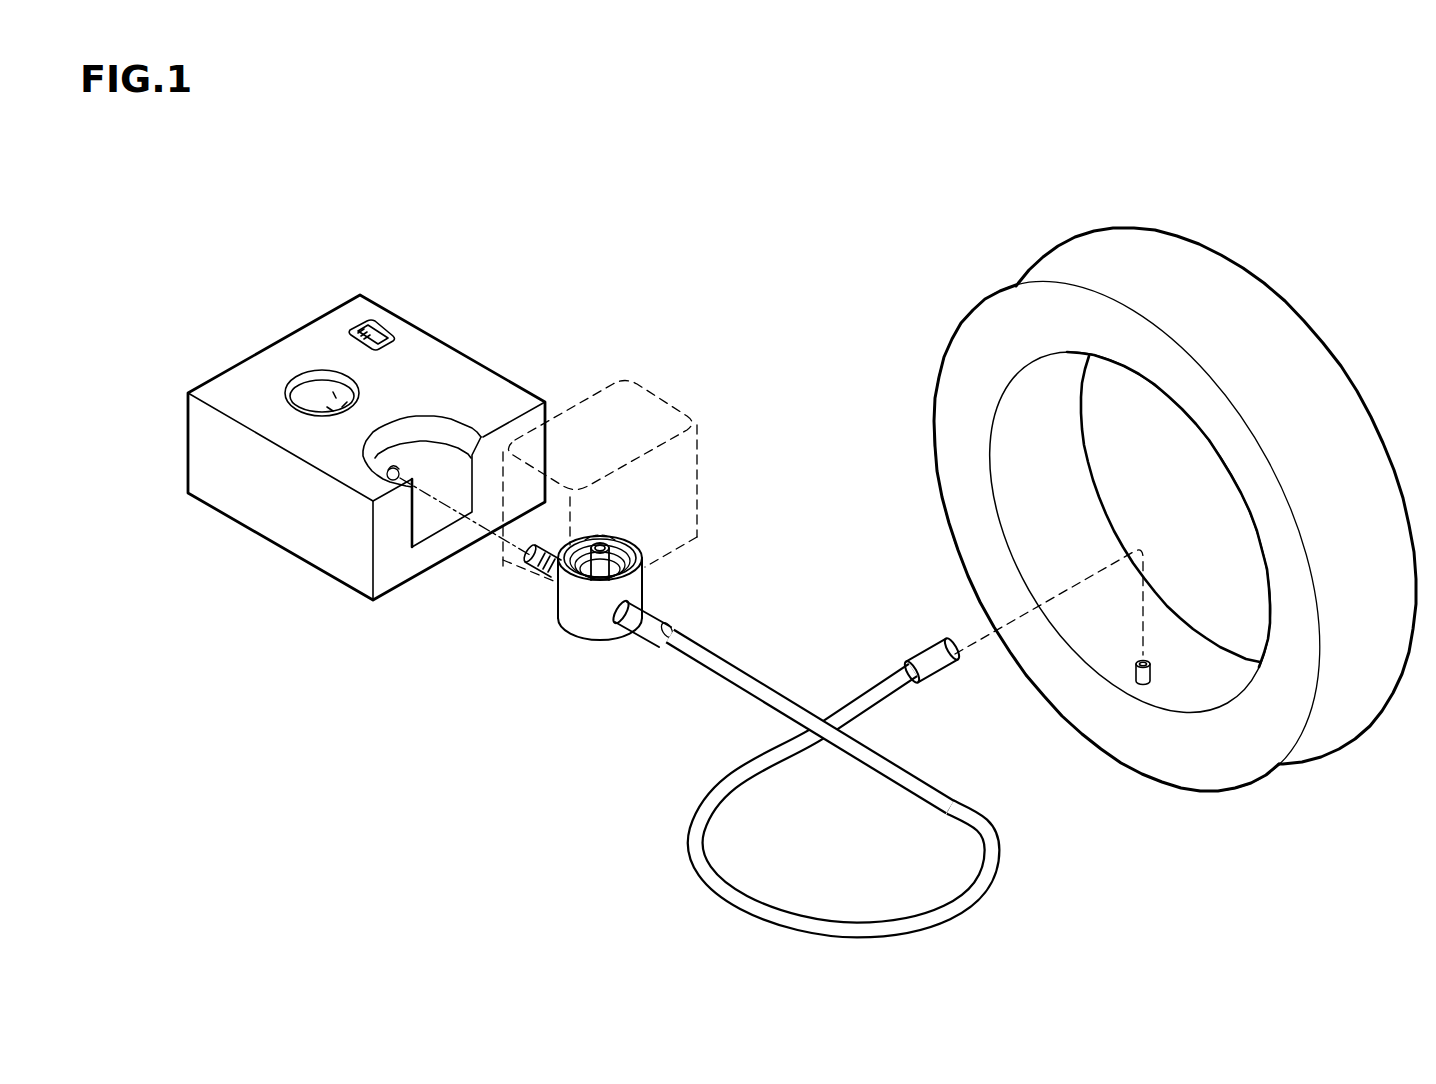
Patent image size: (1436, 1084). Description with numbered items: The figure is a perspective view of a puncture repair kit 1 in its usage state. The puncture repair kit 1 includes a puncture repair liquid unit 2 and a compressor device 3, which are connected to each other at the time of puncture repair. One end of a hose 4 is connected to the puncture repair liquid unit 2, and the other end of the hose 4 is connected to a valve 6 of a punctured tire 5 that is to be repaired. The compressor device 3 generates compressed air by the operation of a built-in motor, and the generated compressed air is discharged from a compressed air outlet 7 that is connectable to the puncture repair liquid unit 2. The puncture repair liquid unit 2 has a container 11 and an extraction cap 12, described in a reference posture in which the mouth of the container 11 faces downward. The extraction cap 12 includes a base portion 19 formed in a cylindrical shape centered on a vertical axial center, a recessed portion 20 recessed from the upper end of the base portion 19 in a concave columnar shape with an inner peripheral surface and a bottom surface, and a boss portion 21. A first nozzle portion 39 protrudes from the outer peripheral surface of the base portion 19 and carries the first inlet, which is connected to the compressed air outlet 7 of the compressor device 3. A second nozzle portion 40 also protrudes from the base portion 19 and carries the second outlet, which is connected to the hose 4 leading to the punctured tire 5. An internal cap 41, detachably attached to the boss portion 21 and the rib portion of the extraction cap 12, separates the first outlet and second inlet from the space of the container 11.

The puncture repair kit 1 is at (698, 243).
The puncture repair liquid unit 2 is at (638, 533).
The compressor device 3 is at (452, 424).
The hose 4 is at (763, 677).
The punctured tire 5 is at (1135, 515).
The valve 6 is at (1137, 680).
The compressed air outlet 7 is at (398, 470).
The container 11 is at (677, 393).
The extraction cap 12 is at (655, 597).
The base portion 19 is at (595, 615).
The recessed portion 20 is at (645, 540).
The boss portion 21 is at (595, 568).
The first nozzle portion 39 is at (542, 580).
The second nozzle portion 40 is at (667, 648).
The internal cap 41 is at (607, 537).